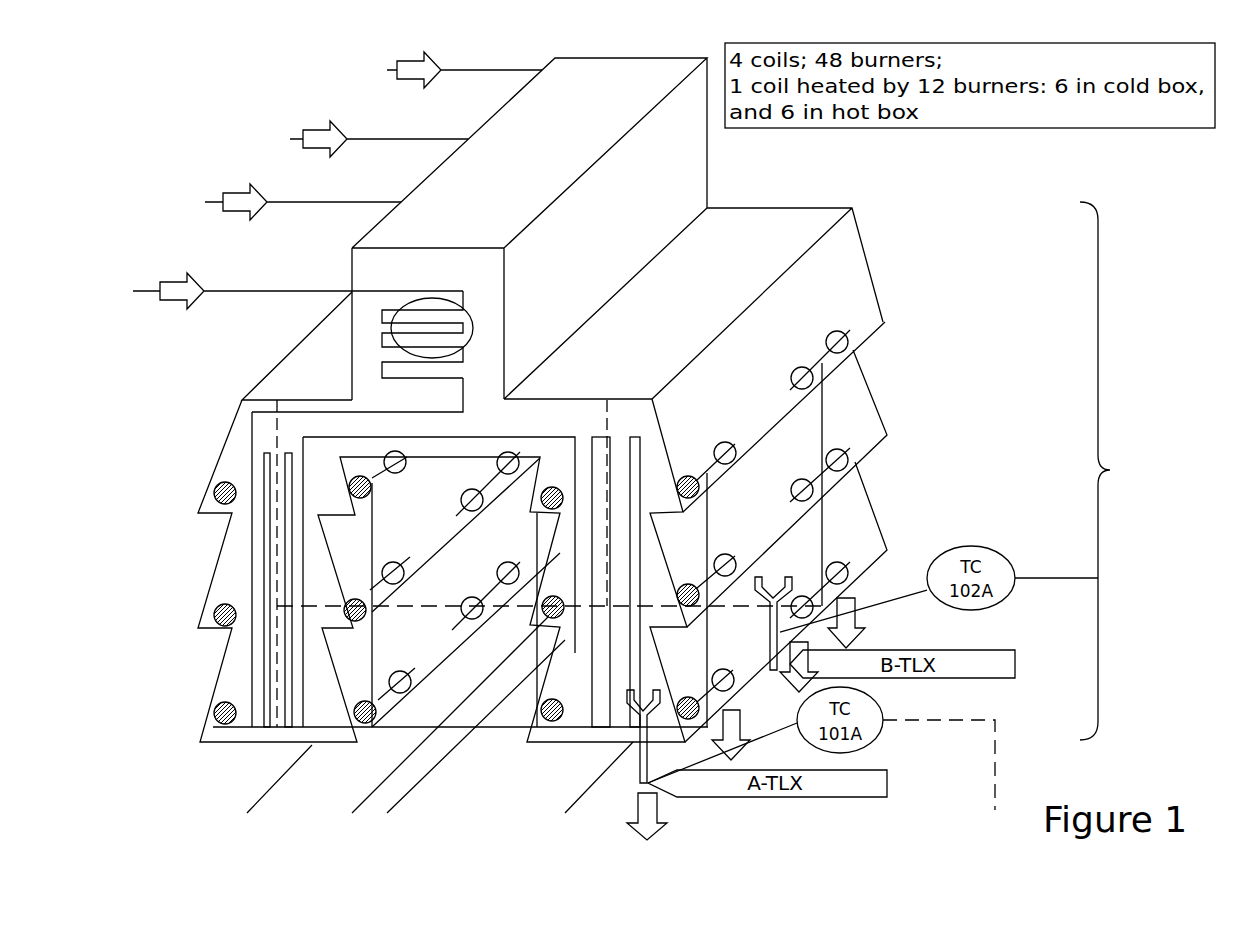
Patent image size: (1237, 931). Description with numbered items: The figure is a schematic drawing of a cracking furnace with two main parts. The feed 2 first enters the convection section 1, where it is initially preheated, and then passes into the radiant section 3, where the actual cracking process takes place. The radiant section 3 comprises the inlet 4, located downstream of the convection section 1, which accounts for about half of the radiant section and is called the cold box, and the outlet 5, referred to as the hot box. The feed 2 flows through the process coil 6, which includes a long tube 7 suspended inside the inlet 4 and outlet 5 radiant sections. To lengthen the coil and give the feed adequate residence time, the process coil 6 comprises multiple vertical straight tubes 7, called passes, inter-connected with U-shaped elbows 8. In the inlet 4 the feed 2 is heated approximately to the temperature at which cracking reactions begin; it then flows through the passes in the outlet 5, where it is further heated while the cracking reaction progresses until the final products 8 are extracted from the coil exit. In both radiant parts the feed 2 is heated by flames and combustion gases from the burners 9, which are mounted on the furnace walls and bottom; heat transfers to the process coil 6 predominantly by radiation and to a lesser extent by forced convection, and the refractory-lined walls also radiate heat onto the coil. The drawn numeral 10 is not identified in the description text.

The convection section 1 is at (548, 135).
The feed 2 is at (187, 303).
The radiant section 3 is at (908, 472).
The inlet 4 is at (308, 378).
The outlet 5 is at (665, 315).
The process coil 6 is at (305, 290).
The tube 7 is at (292, 528).
The U-shaped elbows 8 is at (297, 730).
The burners 9 is at (647, 831).
The burners 10 is at (812, 384).